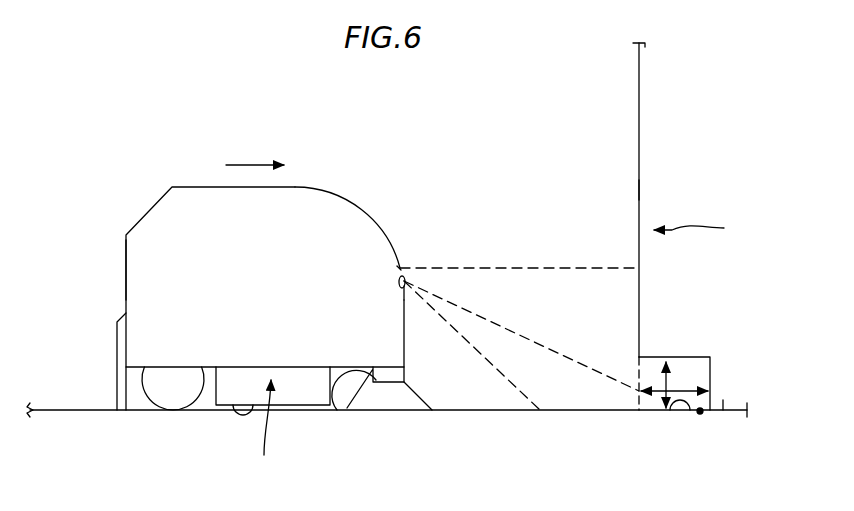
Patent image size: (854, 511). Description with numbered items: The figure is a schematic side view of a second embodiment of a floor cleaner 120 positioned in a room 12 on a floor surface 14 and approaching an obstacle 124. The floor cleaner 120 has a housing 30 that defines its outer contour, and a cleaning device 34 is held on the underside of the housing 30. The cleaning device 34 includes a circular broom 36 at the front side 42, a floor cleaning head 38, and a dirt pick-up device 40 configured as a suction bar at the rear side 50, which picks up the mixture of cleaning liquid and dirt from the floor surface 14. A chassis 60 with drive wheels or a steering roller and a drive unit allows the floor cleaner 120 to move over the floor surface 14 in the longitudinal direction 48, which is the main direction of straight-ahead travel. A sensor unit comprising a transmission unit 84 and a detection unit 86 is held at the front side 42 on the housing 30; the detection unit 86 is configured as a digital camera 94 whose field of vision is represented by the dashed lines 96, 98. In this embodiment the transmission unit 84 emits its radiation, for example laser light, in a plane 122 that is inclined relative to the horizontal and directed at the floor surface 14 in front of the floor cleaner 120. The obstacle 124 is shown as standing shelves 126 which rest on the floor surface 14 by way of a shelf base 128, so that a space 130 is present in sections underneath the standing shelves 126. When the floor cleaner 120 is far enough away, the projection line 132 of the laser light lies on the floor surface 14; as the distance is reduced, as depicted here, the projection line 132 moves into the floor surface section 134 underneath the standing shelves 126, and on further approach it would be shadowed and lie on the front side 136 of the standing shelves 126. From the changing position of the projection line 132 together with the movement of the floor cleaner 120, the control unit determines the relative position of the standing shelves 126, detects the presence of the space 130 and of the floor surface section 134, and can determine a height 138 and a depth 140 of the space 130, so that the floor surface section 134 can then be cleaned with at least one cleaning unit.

The room 12 is at (538, 105).
The floor surface 14 is at (58, 410).
The housing 30 is at (336, 223).
The cleaning device 34 is at (262, 431).
The circular broom 36 is at (386, 380).
The floor cleaning head 38 is at (303, 394).
The dirt pick-up device 40 is at (120, 410).
The front side 42 is at (405, 340).
The longitudinal direction 48 is at (255, 136).
The rear side 50 is at (126, 260).
The chassis 60 is at (204, 401).
The transmission unit 84 is at (402, 292).
The detection unit 86 is at (398, 280).
The digital camera 94 is at (398, 268).
The dashed line of field of vision 96 is at (578, 268).
The dashed line of field of vision 98 is at (492, 378).
The floor cleaner 120 is at (178, 158).
The plane 122 is at (562, 352).
The obstacle 124 is at (705, 228).
The standing shelves 126 is at (668, 190).
The shelf base 128 is at (724, 412).
The space 130 is at (711, 357).
The projection line 132 is at (700, 414).
The floor surface section 134 is at (688, 408).
The front side of standing shelves 136 is at (639, 138).
The height 138 is at (680, 381).
The depth 140 is at (682, 384).